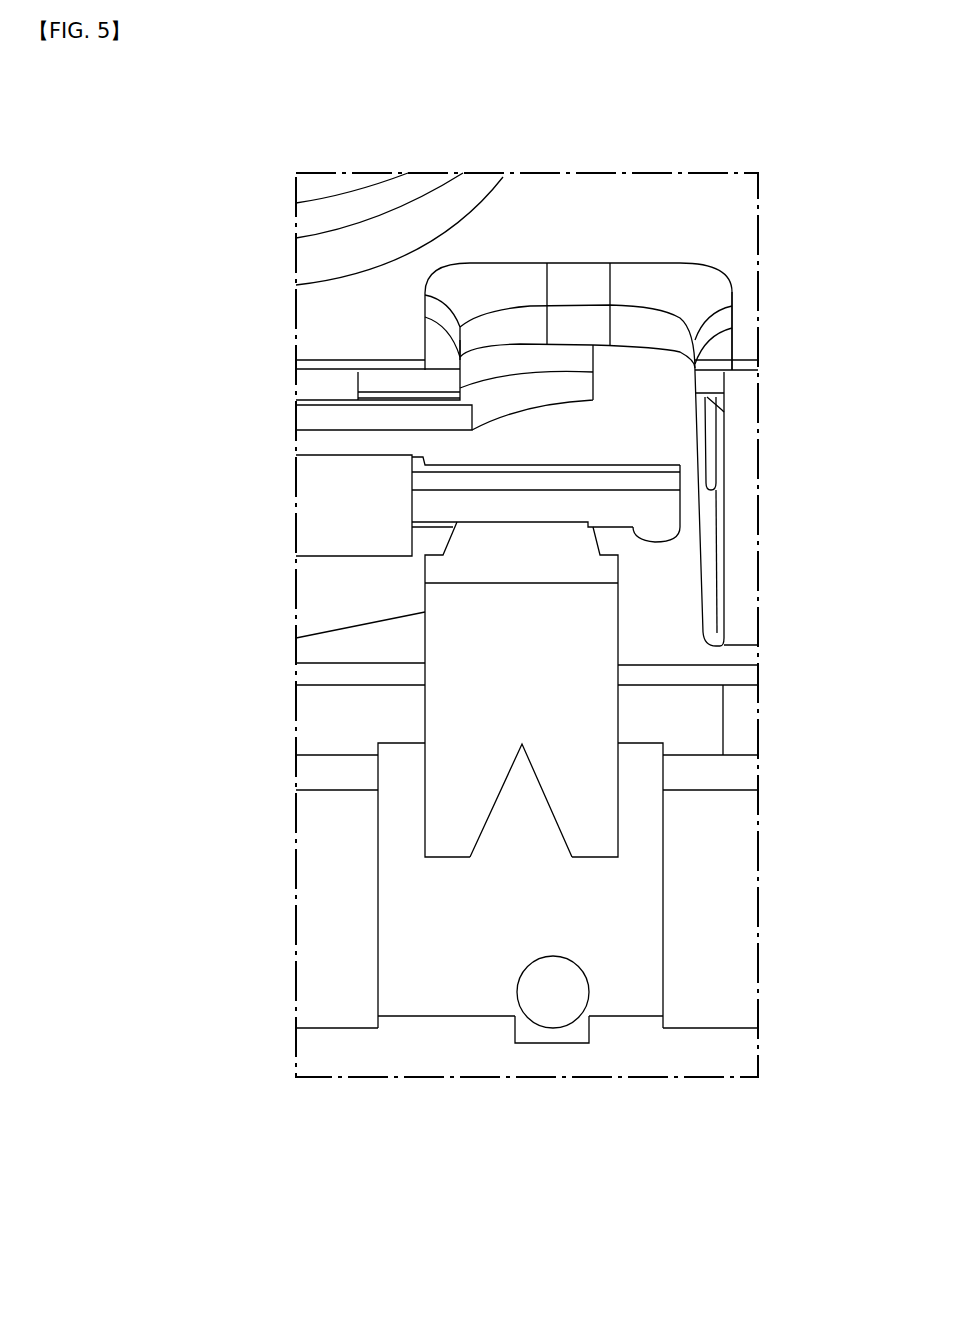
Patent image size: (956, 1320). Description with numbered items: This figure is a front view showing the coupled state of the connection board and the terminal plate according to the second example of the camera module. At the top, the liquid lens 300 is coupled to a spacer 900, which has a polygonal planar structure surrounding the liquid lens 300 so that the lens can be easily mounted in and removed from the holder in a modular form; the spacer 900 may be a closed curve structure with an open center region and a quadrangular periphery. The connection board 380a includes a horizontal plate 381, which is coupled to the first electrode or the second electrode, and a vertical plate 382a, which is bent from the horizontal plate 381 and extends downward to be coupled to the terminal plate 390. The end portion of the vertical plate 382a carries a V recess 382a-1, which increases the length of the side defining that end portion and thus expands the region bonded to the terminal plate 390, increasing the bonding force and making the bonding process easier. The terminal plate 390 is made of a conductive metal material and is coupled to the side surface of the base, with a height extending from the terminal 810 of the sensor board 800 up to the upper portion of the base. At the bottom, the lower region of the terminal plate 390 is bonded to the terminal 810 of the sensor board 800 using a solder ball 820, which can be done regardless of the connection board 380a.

The liquid lens 300 is at (460, 383).
The horizontal plate 381 is at (487, 563).
The connection board 380a is at (425, 708).
The vertical plate 382a is at (580, 722).
The V recess 382a-1 is at (487, 818).
The terminal plate 390 is at (618, 920).
The sensor board 800 is at (682, 1048).
The terminal 810 is at (575, 1030).
The solder ball 820 is at (553, 1000).
The spacer 900 is at (618, 513).